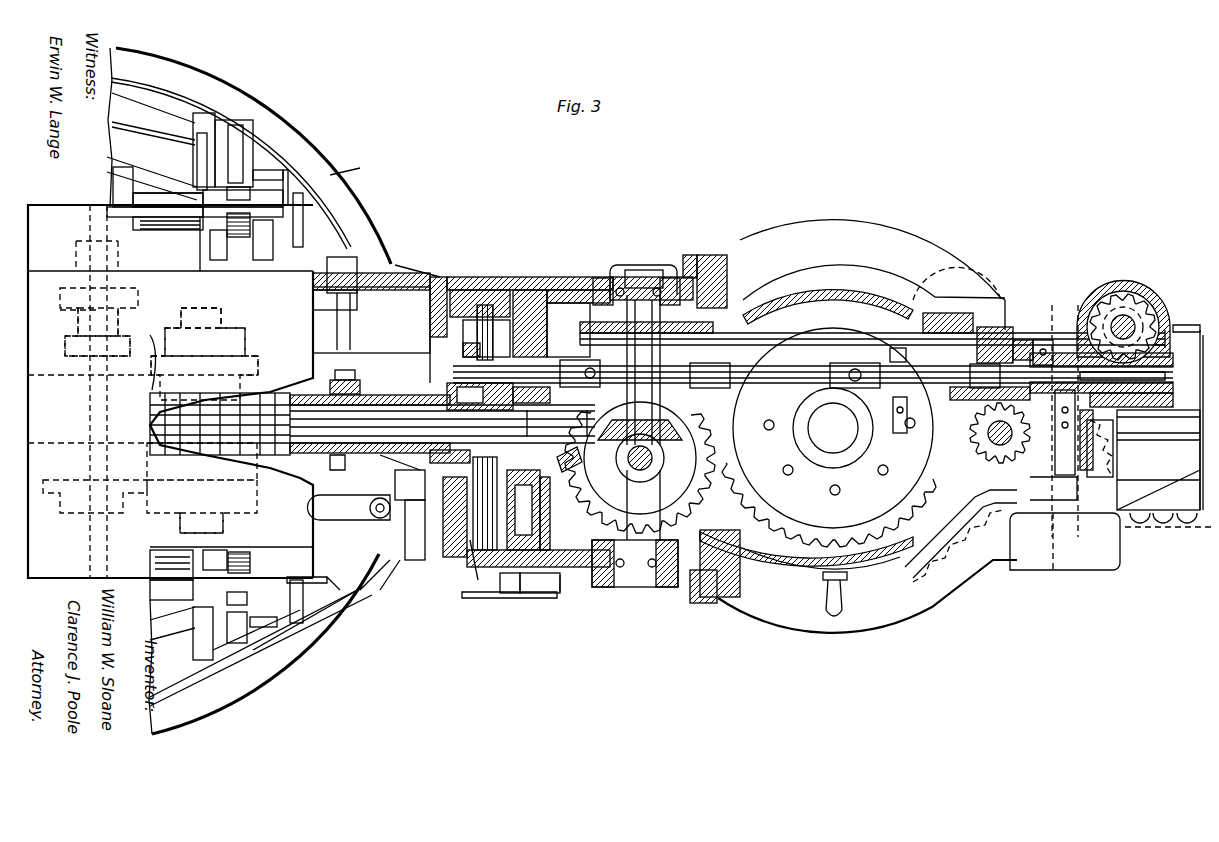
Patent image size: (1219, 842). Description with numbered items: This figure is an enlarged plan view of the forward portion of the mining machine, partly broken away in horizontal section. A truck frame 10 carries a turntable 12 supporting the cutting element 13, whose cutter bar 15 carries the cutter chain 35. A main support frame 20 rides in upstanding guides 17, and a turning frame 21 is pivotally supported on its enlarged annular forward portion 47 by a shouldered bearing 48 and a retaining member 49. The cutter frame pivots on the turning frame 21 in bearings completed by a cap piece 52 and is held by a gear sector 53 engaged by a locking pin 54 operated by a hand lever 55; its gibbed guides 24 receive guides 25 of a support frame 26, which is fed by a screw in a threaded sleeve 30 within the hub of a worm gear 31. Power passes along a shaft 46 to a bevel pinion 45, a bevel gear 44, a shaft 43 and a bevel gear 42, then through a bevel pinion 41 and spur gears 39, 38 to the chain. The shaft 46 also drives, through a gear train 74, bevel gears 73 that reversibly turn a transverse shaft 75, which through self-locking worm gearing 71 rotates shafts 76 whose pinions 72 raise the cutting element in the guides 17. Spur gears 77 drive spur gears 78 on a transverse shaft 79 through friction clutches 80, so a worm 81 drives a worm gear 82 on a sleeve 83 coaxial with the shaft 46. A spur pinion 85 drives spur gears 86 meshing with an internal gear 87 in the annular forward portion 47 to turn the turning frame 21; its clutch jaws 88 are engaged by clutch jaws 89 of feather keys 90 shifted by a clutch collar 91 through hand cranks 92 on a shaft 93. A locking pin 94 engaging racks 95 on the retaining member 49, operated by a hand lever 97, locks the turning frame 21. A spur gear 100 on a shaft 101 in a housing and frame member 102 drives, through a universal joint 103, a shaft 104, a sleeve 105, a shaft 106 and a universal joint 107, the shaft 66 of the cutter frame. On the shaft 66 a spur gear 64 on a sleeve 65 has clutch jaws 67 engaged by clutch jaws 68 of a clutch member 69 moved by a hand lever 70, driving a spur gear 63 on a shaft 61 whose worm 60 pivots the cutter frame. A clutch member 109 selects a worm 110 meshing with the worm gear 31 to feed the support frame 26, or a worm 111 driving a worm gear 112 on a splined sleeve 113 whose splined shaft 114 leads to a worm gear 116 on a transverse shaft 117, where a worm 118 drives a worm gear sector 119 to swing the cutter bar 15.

The truck frame 10 is at (190, 710).
The turntable 12 is at (255, 620).
The cutting element 13 is at (841, 256).
The cutter bar 15 is at (1190, 525).
The upstanding guides 17 is at (255, 190).
The main support frame 20 is at (400, 268).
The turning frame 21 is at (548, 275).
The gibbed guides 24 is at (705, 255).
The guides 25 is at (725, 258).
The support frame 26 is at (880, 625).
The threaded sleeve 30 is at (968, 432).
The worm gear 31 is at (983, 403).
The cutter chain 35 is at (1160, 525).
The spur gear 38 is at (783, 565).
The spur gear 39 is at (565, 595).
The bevel pinion 41 is at (660, 480).
The bevel gear 42 is at (656, 417).
The shaft 43 is at (597, 278).
The bevel gear 44 is at (833, 428).
The bevel pinion 45 is at (590, 467).
The shaft 46 is at (430, 396).
The annular forward portion 47 is at (490, 290).
The shouldered bearing 48 is at (520, 275).
The retaining member 49 is at (470, 300).
The cap piece 52 is at (660, 275).
The gear sector 53 is at (595, 590).
The locking pin 54 is at (575, 598).
The hand lever 55 is at (505, 598).
The worm 60 is at (745, 295).
The shaft 61 is at (800, 337).
The spur gear 63 is at (985, 325).
The spur gear 64 is at (1000, 470).
The sleeve 65 is at (1020, 338).
The shaft 66 is at (1045, 338).
The clutch jaws 67 is at (930, 300).
The clutch jaws 68 is at (905, 312).
The clutch member 69 is at (900, 350).
The hand lever 70 is at (835, 622).
The self-locking worm gearing 71 is at (118, 241).
The pinions 72 is at (300, 240).
The bevel gears 73 is at (80, 405).
The gear train 74 is at (152, 349).
The transverse shaft 75 is at (67, 313).
The shafts 76 is at (170, 180).
The spur gears 77 is at (73, 416).
The spur gears 78 is at (245, 345).
The transverse shaft 79 is at (224, 528).
The friction clutches 80 is at (230, 300).
The worm 81 is at (225, 398).
The worm gear 82 is at (180, 455).
The sleeve 83 is at (441, 435).
The spur pinion 85 is at (400, 460).
The spur gears 86 is at (445, 570).
The internal gear 87 is at (468, 580).
The clutch jaws 88 is at (410, 525).
The clutch jaws 89 is at (457, 395).
The feather keys 90 is at (348, 518).
The clutch collar 91 is at (340, 375).
The hand cranks 92 is at (305, 212).
The shaft 93 is at (352, 318).
The locking pin 94 is at (370, 585).
The toothed sectors or racks 95 is at (386, 585).
The hand lever 97 is at (313, 573).
The spur gear 100 is at (445, 360).
The shaft 101 is at (570, 290).
The housing and frame member 102 is at (431, 321).
The universal joint 103 is at (568, 358).
The shaft 104 is at (655, 355).
The sleeve 105 is at (790, 300).
The shaft 106 is at (813, 367).
The universal joint 107 is at (910, 368).
The clutch member 109 is at (1095, 312).
The worm 110 is at (1080, 280).
The worm 111 is at (1195, 320).
The worm gear 112 is at (1170, 320).
The splined sleeve 113 is at (1150, 300).
The splined shaft 114 is at (1125, 294).
The worm gear 116 is at (1052, 305).
The transverse shaft 117 is at (1075, 572).
The worm 118 is at (1112, 572).
The worm gear sector 119 is at (965, 580).